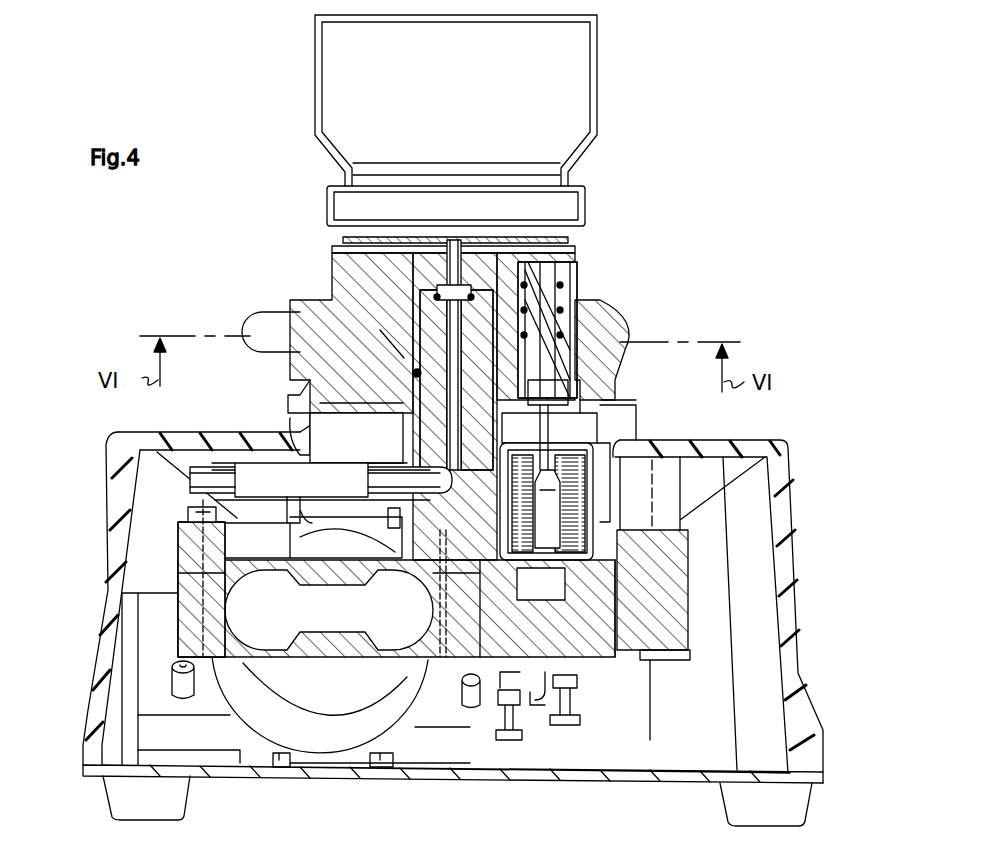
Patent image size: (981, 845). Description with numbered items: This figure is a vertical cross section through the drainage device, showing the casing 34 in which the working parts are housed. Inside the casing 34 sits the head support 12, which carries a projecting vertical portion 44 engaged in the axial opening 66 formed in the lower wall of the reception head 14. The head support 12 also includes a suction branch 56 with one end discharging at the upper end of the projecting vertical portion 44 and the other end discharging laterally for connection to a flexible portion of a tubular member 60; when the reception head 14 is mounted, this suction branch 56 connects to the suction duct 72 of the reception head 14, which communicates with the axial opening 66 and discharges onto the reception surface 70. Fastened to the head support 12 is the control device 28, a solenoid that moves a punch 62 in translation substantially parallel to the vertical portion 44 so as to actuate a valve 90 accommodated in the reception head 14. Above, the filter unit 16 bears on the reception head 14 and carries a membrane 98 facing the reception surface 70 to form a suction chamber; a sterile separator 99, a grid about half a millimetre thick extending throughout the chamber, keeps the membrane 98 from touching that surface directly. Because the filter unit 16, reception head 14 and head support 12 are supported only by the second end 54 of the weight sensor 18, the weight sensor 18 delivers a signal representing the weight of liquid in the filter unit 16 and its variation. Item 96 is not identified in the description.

The head support 12 is at (403, 445).
The reception head 14 is at (348, 279).
The filter unit 16 is at (347, 76).
The weight sensor 18 is at (200, 623).
The control device 28 is at (595, 483).
The casing 34 is at (123, 443).
The projecting vertical portion 44 is at (420, 373).
The second end 54 is at (428, 603).
The suction branch 56 is at (457, 325).
The tubular member 60 is at (263, 477).
The punch 62 is at (602, 416).
The axial opening 66 is at (404, 360).
The reception surface 70 is at (343, 243).
The suction duct 72 is at (453, 260).
The valve 90 is at (550, 320).
The band 96 is at (570, 243).
The membrane 98 is at (378, 184).
The sterile separator 99 is at (548, 240).